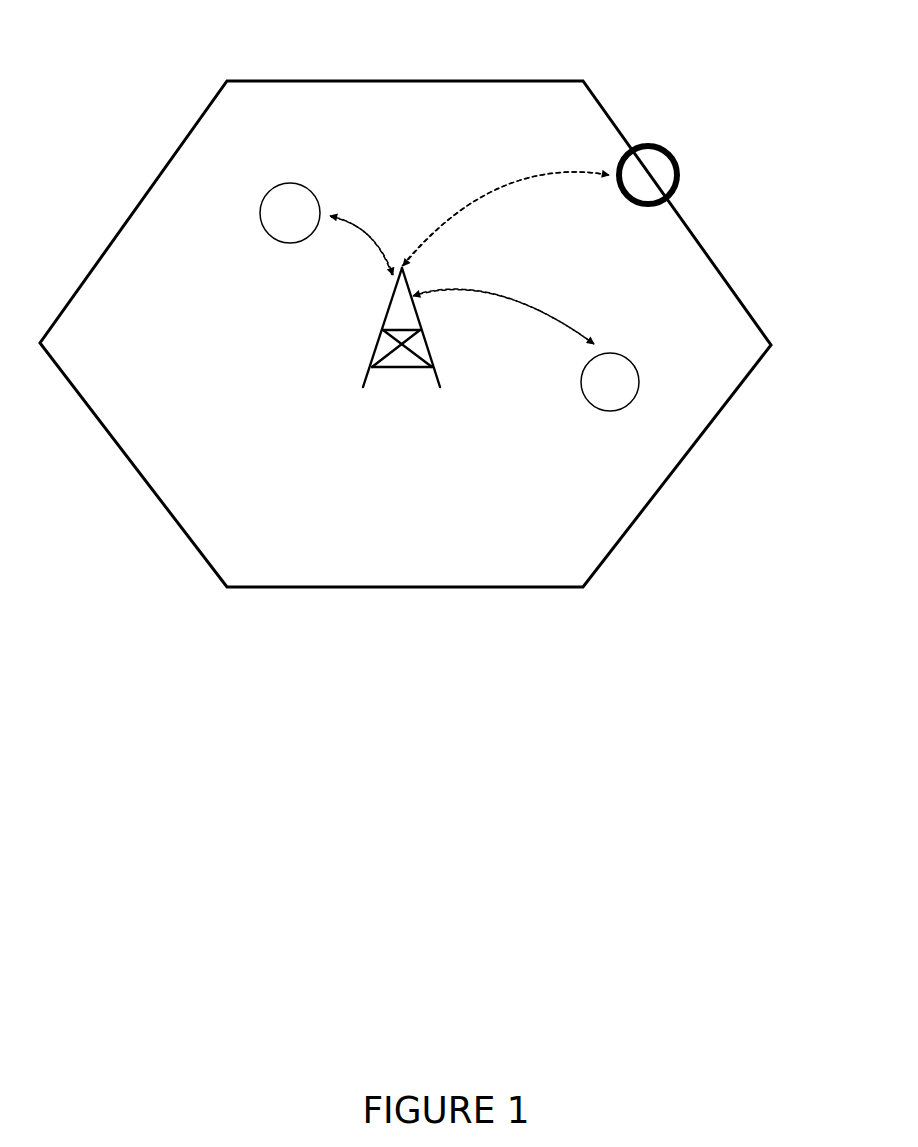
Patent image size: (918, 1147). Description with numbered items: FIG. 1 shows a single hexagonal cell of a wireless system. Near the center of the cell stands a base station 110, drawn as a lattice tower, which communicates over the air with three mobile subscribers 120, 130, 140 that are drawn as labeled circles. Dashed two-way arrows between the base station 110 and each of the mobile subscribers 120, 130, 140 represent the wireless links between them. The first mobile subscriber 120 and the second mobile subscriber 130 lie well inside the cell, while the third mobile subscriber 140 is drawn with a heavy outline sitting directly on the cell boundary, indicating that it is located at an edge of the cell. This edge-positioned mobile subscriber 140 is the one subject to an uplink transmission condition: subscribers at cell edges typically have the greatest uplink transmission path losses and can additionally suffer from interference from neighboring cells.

The base station 110 is at (386, 438).
The mobile subscriber 120 is at (291, 172).
The mobile subscriber 130 is at (628, 343).
The mobile subscriber 140 is at (647, 154).